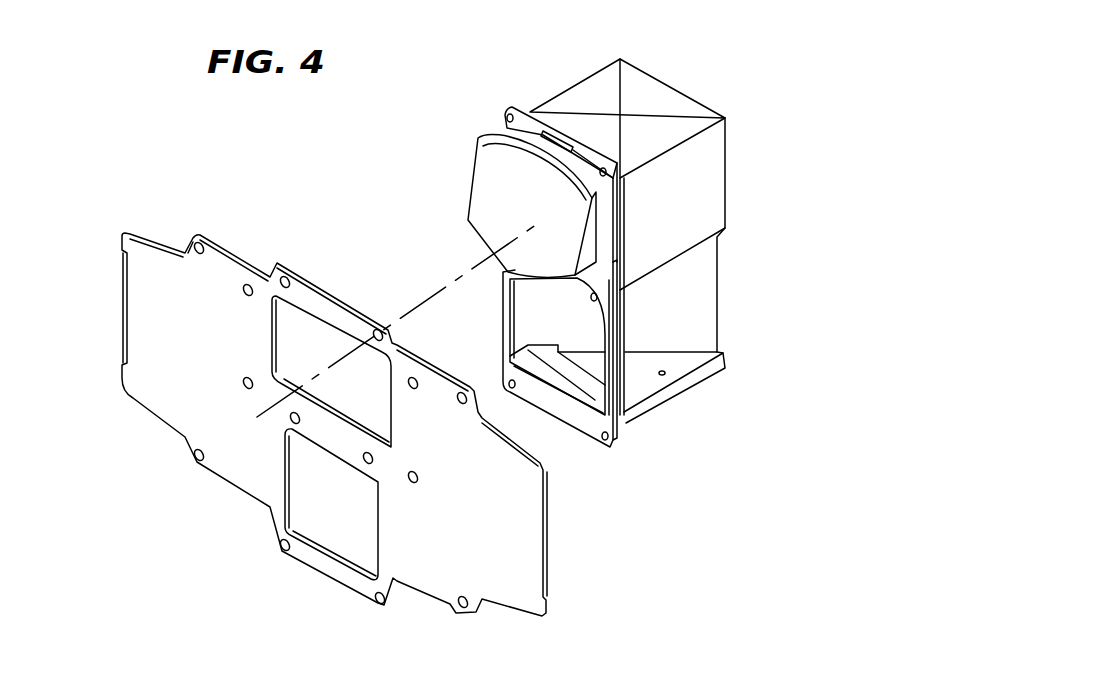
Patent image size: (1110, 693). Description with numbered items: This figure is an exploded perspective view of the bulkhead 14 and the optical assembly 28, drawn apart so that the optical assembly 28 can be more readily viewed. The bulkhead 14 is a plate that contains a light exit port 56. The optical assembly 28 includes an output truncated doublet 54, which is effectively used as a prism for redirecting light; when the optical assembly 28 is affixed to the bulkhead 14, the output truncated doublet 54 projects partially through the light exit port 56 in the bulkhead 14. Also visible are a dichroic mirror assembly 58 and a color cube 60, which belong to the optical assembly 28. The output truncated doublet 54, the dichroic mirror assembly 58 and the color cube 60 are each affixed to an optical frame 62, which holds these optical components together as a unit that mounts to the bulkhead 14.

The bulkhead 14 is at (422, 424).
The optical assembly 28 is at (438, 90).
The output truncated doublet 54 is at (490, 214).
The light exit port 56 is at (310, 322).
The dichroic mirror assembly 58 is at (695, 308).
The color cube 60 is at (712, 192).
The optical frame 62 is at (650, 403).